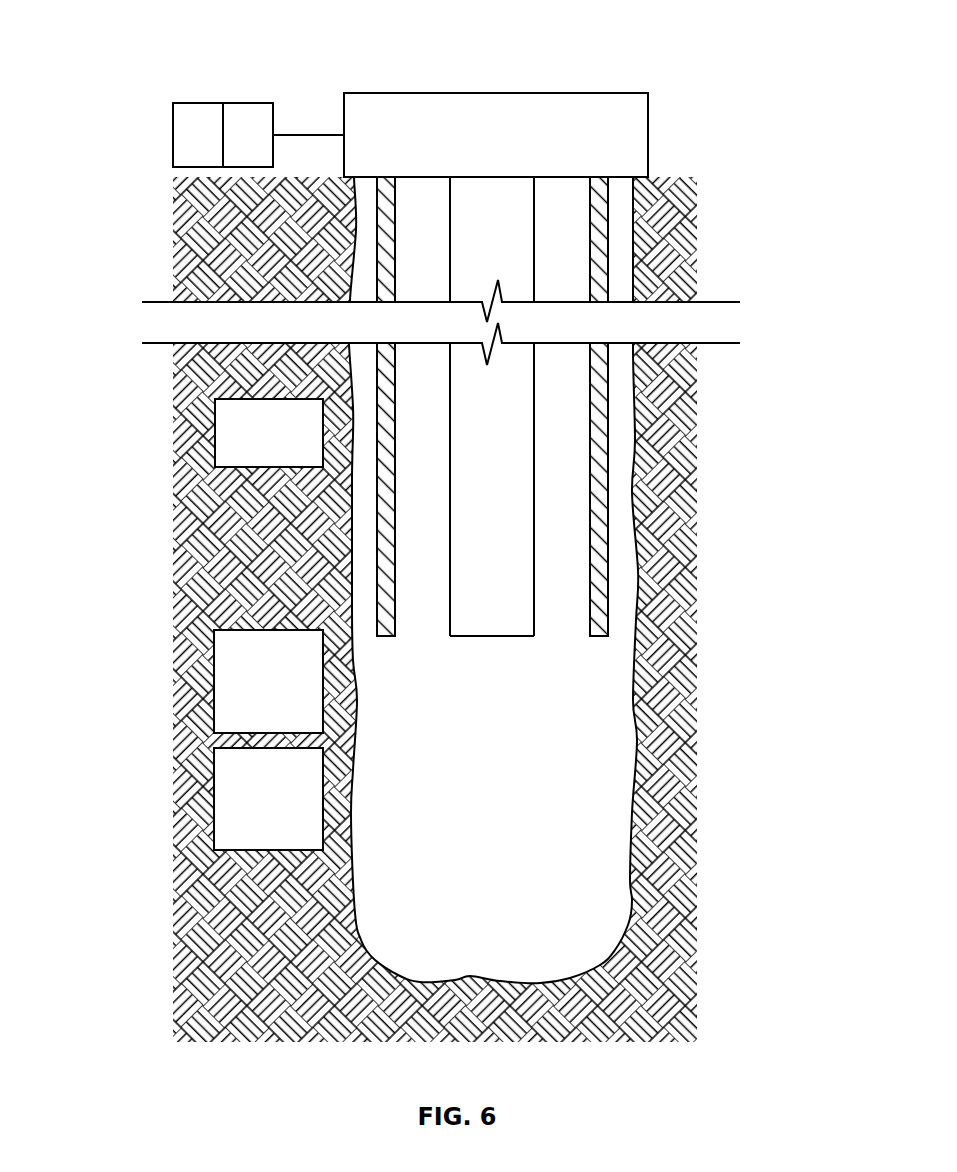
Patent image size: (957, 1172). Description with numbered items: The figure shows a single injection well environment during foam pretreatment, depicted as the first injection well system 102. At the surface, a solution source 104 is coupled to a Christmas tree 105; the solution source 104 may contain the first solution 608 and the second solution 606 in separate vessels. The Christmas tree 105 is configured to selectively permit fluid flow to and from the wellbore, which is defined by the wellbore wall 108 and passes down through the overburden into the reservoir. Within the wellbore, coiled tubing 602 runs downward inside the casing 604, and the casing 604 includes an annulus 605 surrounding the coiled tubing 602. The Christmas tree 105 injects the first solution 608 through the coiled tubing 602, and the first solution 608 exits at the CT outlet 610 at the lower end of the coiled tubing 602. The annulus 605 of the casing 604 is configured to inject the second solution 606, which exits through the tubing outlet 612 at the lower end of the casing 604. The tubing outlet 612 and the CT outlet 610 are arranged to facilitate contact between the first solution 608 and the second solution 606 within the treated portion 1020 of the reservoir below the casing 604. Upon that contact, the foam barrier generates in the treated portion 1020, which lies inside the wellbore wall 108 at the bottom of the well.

The first injection well system 102 is at (672, 166).
The solution source 104 is at (250, 102).
The Christmas tree 105 is at (472, 168).
The wellbore wall 108 is at (643, 718).
The coiled tubing 602 is at (472, 546).
The casing 604 is at (602, 570).
The annulus 605 is at (423, 492).
The second solution 606 is at (417, 608).
The first solution 608 is at (452, 750).
The CT outlet 610 is at (523, 640).
The tubing outlet 612 is at (424, 603).
The treated portion of the reservoir 1020 is at (522, 918).